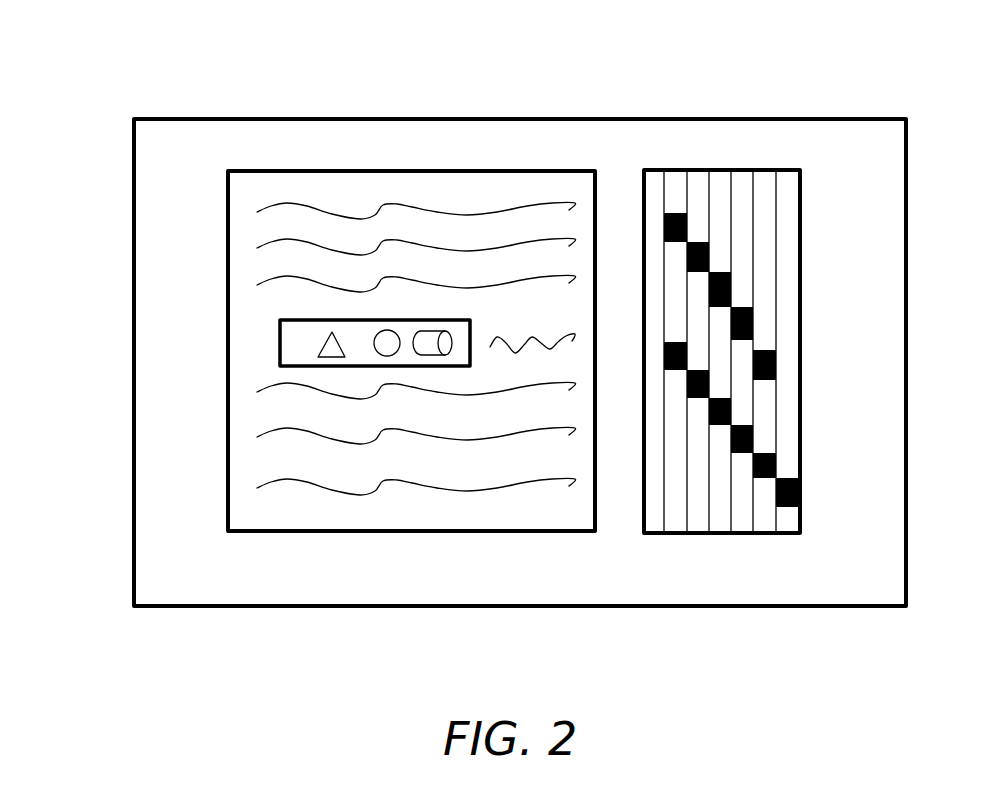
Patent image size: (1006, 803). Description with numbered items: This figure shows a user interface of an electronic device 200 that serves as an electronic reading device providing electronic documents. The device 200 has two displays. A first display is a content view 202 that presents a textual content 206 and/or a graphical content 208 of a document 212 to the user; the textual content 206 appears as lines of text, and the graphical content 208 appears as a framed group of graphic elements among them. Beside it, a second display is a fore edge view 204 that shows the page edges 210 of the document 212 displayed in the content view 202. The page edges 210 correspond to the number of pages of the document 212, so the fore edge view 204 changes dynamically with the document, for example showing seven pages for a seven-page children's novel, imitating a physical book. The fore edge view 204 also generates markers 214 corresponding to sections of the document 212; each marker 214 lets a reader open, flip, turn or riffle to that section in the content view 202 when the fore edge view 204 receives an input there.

The electronic device 200 is at (852, 54).
The content view 202 is at (597, 107).
The fore edge view 204 is at (811, 287).
The textual content 206 is at (246, 479).
The graphical content 208 is at (279, 340).
The page edges 210 is at (803, 301).
The document 212 is at (418, 516).
The markers 214 is at (825, 493).